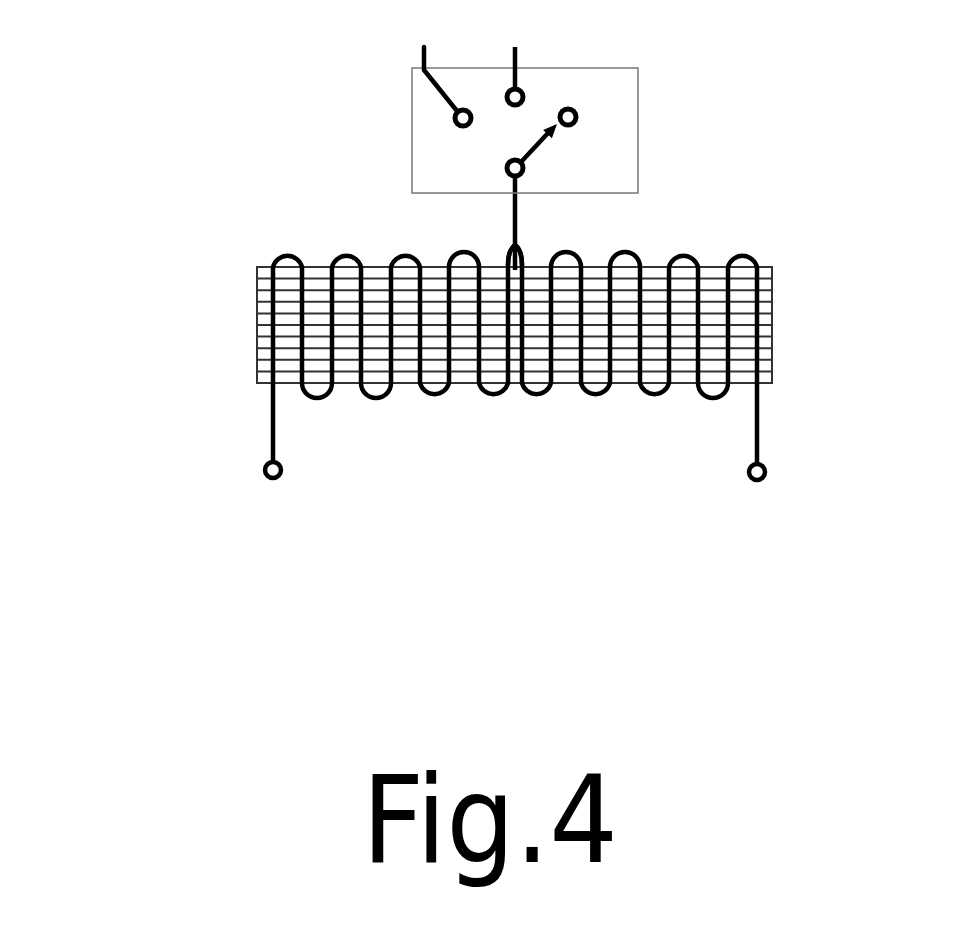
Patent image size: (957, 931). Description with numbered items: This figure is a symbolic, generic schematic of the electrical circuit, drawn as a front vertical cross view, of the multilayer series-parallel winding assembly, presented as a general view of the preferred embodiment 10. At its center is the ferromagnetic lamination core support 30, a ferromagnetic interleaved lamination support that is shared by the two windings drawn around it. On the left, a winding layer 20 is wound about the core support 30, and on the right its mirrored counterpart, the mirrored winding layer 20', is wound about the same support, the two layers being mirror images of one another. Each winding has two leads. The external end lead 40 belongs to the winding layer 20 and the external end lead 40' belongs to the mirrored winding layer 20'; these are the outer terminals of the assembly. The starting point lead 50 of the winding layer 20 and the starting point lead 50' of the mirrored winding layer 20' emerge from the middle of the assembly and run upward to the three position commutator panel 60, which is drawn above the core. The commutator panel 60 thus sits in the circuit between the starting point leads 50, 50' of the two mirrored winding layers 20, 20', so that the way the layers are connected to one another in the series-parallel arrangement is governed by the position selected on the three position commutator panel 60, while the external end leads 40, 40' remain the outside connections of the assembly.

The general view of the preferred embodiment 10 is at (763, 189).
The winding layer 20 is at (394, 425).
The mirrored winding layer 20' is at (636, 425).
The ferromagnetic lamination core support 30 is at (258, 370).
The external end lead 40 is at (218, 507).
The external end lead of the mirrored winding layer 40' is at (824, 517).
The starting point lead 50 is at (471, 231).
The starting point lead of the mirrored winding 50' is at (562, 231).
The three position commutator panel 60 is at (605, 113).